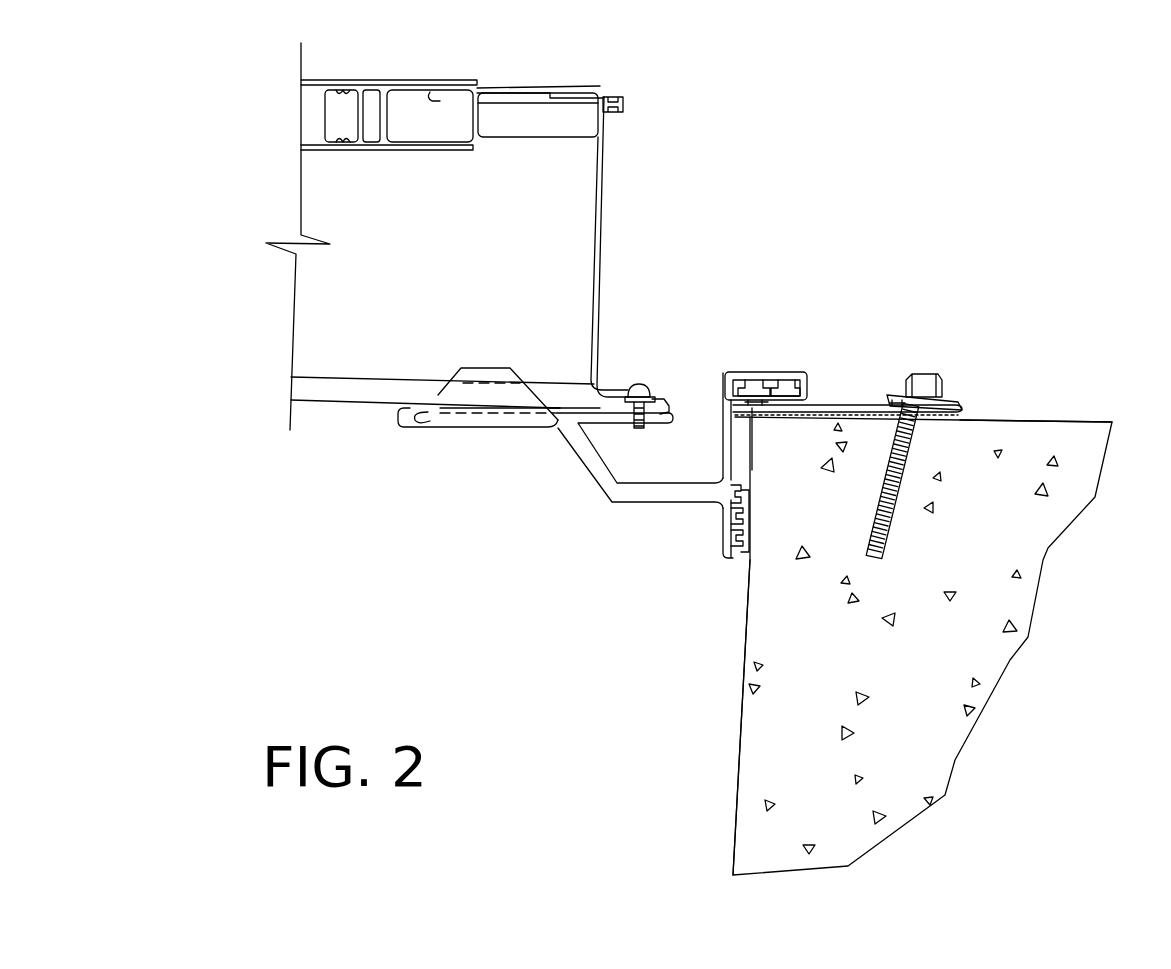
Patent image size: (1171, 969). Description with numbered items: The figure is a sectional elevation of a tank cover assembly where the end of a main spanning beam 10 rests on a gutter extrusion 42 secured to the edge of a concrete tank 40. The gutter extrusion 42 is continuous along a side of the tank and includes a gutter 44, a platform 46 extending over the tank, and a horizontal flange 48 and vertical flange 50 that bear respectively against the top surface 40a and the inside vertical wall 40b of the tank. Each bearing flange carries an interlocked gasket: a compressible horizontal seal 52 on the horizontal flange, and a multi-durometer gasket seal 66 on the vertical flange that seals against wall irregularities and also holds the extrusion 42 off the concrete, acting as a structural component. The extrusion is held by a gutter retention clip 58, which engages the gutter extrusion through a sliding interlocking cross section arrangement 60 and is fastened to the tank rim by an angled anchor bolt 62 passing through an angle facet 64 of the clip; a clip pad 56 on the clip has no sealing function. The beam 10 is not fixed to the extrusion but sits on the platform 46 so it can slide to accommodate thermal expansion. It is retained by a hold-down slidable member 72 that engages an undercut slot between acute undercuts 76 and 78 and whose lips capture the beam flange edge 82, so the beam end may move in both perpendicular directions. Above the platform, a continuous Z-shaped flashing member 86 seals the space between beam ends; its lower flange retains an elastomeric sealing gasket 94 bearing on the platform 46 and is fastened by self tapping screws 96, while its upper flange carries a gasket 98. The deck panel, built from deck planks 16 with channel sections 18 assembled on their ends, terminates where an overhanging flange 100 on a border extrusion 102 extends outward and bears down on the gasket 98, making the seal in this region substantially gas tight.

The spanning beam 10 is at (413, 285).
The deck plank 16 is at (335, 95).
The channel section 18 is at (450, 82).
The concrete tank edge 40 is at (1000, 430).
The top surface of tank 40a is at (985, 420).
The inside vertical wall of tank 40b is at (742, 690).
The gutter extrusion 42 is at (639, 512).
The gutter 44 is at (680, 480).
The platform 46 is at (565, 402).
The horizontal flange 48 is at (807, 382).
The vertical flange 50 is at (719, 542).
The horizontal seal 52 is at (773, 420).
The clip pad 56 is at (945, 422).
The gutter retention clip 58 is at (929, 233).
The sliding interlocking cross section arrangement 60 is at (784, 359).
The anchor bolt 62 is at (931, 373).
The angle facet 64 is at (907, 373).
The gasket seal 66 is at (750, 513).
The hold-down slidable member 72 is at (462, 413).
The acute undercut 76 is at (438, 395).
The acute undercut 78 is at (533, 425).
The beam flange edge 82 is at (323, 393).
The flashing member 86 is at (619, 200).
The elastomeric sealing gasket 94 is at (652, 418).
The self tapping screw 96 is at (648, 383).
The gasket 98 is at (603, 95).
The overhanging flange 100 is at (535, 85).
The extrusion 102 is at (478, 143).